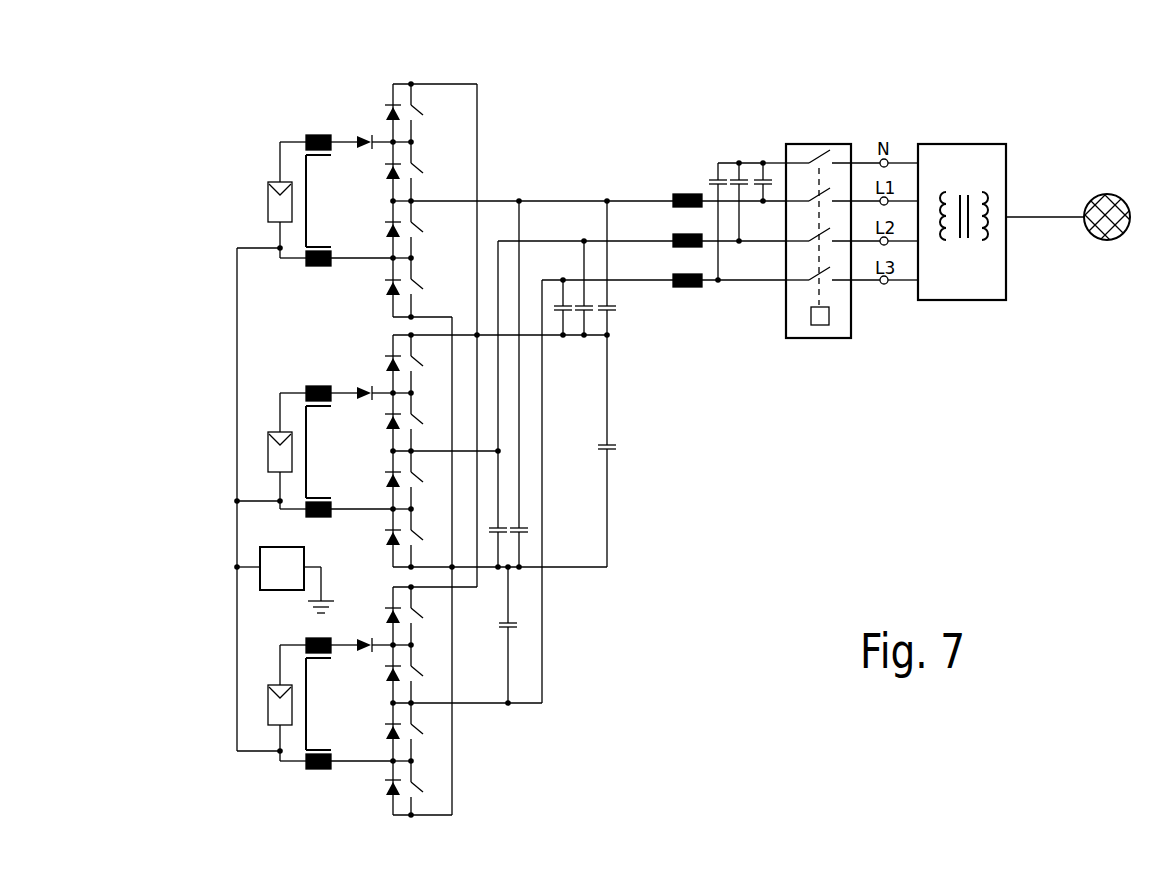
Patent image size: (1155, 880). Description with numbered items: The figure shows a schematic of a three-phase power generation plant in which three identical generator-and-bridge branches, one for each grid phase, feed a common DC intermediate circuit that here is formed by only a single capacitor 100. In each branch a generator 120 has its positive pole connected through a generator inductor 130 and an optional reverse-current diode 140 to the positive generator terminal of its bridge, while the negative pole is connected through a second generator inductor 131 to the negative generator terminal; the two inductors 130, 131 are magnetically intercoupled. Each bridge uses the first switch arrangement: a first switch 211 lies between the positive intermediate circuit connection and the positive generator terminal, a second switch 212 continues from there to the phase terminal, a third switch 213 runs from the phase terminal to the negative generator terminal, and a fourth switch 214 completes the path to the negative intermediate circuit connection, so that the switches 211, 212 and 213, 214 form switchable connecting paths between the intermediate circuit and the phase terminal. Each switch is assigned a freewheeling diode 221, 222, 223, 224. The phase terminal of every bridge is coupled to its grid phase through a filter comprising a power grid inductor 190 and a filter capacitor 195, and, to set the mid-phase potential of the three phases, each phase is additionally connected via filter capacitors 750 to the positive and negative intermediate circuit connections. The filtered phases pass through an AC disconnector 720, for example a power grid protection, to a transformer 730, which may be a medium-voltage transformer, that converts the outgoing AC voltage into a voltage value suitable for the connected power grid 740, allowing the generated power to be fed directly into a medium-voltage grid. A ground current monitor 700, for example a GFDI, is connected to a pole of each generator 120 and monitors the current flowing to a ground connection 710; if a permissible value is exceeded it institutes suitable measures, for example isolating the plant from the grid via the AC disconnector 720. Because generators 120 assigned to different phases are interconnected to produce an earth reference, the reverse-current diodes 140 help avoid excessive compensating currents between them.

The intermediate circuit capacitor 100 is at (612, 451).
The generator 120 is at (268, 208).
The generator inductor 130 is at (315, 135).
The second generator inductor 131 is at (317, 268).
The reverse-current diode 140 is at (363, 139).
The power grid inductor 190 is at (673, 276).
The filter capacitor 195 is at (759, 177).
The first switch 211 is at (432, 200).
The second switch 212 is at (420, 164).
The third switch 213 is at (422, 227).
The fourth switch 214 is at (419, 285).
The freewheeling diode 221 is at (391, 103).
The freewheeling diode 222 is at (390, 177).
The freewheeling diode 223 is at (390, 223).
The freewheeling diode 224 is at (388, 291).
The ground current monitor 700 is at (258, 562).
The ground connection 710 is at (322, 592).
The AC disconnector 720 is at (812, 340).
The transformer 730 is at (965, 301).
The power grid 740 is at (1105, 241).
The filter capacitors 750 is at (570, 311).